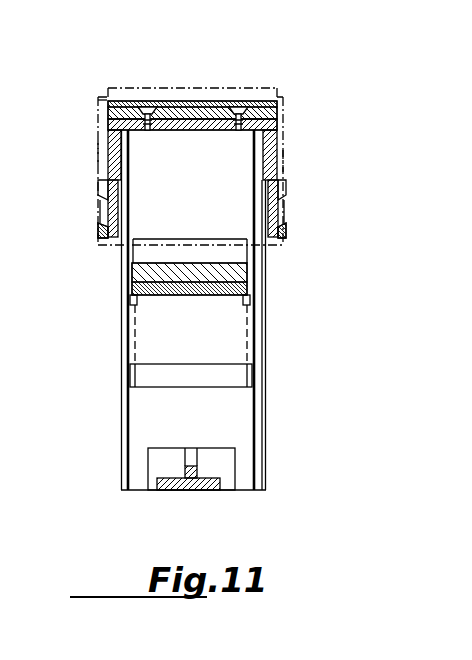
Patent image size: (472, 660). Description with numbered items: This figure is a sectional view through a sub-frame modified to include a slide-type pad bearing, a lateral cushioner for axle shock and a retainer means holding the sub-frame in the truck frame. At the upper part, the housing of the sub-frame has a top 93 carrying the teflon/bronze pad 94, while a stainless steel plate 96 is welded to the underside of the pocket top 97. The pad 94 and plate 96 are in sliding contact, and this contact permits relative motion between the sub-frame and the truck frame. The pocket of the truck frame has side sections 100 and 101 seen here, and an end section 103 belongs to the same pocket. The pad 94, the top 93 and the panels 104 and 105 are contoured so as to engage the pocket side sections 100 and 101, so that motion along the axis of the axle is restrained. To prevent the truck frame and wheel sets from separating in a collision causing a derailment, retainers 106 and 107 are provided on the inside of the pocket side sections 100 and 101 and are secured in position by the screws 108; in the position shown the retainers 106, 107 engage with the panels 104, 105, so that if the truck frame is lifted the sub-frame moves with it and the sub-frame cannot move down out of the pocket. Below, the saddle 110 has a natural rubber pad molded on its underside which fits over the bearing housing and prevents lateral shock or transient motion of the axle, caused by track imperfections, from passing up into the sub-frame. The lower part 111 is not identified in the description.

The housing top 93 is at (205, 110).
The teflon/bronze pad 94 is at (258, 108).
The stainless steel plate 96 is at (170, 102).
The pocket top 97 is at (123, 89).
The pocket side section 100 is at (98, 151).
The pocket side section 101 is at (283, 160).
The pocket end section 103 is at (9, 104).
The panel 104 is at (108, 143).
The panel 105 is at (281, 146).
The retainer 106 is at (285, 205).
The retainer 107 is at (100, 209).
The screws 108 is at (100, 227).
The saddle 110 is at (222, 272).
The piston seal band 111 is at (170, 294).